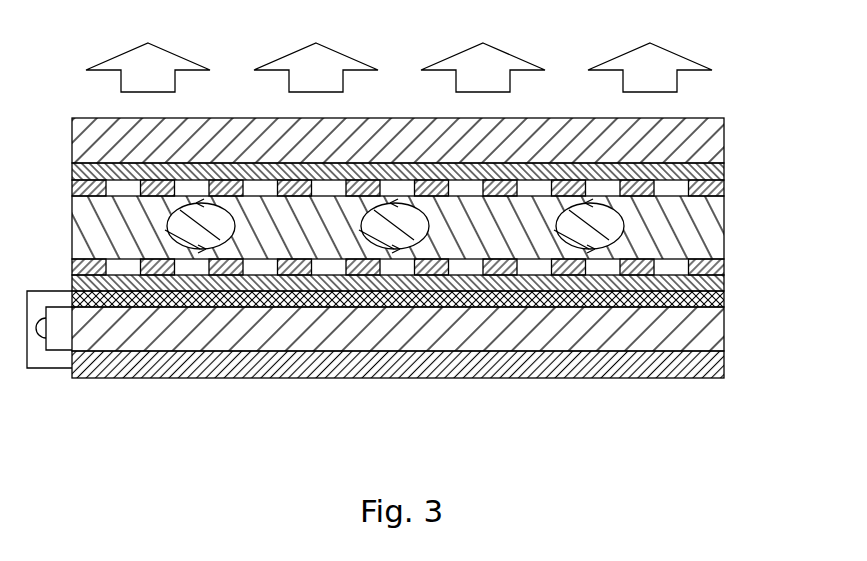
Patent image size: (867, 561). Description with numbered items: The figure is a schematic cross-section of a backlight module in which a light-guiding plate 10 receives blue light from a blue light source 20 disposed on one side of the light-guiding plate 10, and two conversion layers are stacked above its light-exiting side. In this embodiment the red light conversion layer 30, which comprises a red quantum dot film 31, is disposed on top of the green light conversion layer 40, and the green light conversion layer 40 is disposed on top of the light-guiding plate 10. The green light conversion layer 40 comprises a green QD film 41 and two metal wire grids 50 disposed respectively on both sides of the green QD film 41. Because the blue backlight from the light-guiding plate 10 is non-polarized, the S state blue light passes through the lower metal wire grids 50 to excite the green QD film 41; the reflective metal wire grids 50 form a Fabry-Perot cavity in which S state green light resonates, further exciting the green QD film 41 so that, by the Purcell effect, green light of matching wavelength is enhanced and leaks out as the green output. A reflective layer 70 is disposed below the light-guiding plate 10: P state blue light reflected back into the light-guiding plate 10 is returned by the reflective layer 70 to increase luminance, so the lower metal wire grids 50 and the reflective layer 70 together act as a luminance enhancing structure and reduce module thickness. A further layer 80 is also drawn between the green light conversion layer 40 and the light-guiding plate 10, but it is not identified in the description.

The light-guiding plate 10 is at (708, 330).
The blue light source 20 is at (48, 368).
The red light conversion layer 30 is at (703, 118).
The red quantum dot film 31 is at (715, 140).
The green light conversion layer 40 is at (451, 221).
The green QD film 41 is at (713, 227).
The metal wire grids 50 is at (718, 178).
The reflective layer 70 is at (708, 365).
The reflective layer 80 is at (710, 298).